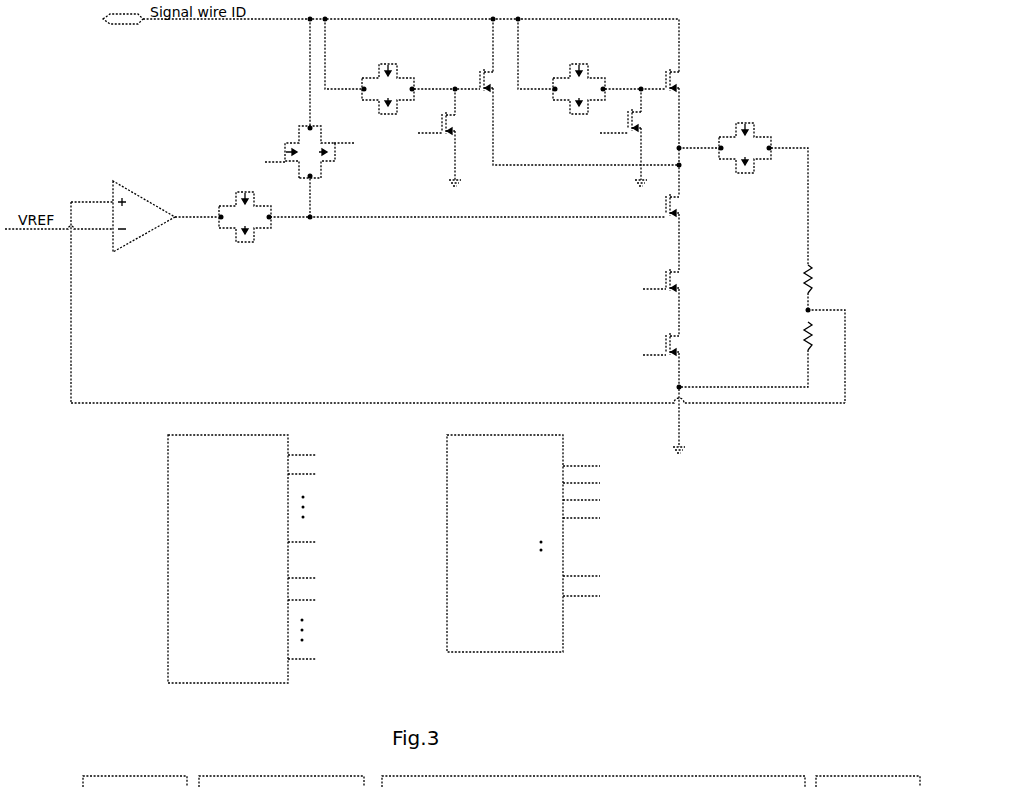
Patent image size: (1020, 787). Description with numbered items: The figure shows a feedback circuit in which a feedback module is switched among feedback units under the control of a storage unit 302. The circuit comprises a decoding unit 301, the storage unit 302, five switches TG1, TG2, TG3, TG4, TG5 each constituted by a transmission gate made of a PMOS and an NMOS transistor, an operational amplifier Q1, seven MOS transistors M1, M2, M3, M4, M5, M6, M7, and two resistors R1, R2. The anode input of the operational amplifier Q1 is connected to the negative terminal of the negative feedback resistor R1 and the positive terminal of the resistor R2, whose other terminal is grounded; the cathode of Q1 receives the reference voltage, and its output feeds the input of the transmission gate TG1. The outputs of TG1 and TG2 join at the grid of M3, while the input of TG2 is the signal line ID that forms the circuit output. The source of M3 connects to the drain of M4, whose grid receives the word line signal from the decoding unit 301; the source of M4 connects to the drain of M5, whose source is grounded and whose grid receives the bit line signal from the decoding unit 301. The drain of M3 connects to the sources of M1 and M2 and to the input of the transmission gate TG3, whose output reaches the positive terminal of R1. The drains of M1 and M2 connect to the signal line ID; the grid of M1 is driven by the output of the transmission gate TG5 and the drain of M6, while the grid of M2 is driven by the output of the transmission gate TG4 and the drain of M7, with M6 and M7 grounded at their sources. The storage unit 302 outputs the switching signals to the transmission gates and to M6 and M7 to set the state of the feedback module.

The operational amplifier Q1 is at (111, 206).
The transmission gate TG1 is at (288, 224).
The transmission gate TG2 is at (378, 151).
The transmission gate TG3 is at (761, 133).
The transmission gate TG4 is at (426, 97).
The transmission gate TG5 is at (617, 99).
The MOS transistor M1 is at (686, 80).
The MOS transistor M2 is at (499, 89).
The MOS transistor M3 is at (686, 205).
The MOS transistor M4 is at (671, 280).
The MOS transistor M5 is at (673, 344).
The MOS transistor M6 is at (638, 148).
The MOS transistor M7 is at (452, 149).
The negative feedback resistor R1 is at (796, 279).
The feedback resistor R2 is at (796, 336).
The decoding unit 301 is at (242, 559).
The storage unit 302 is at (523, 543).